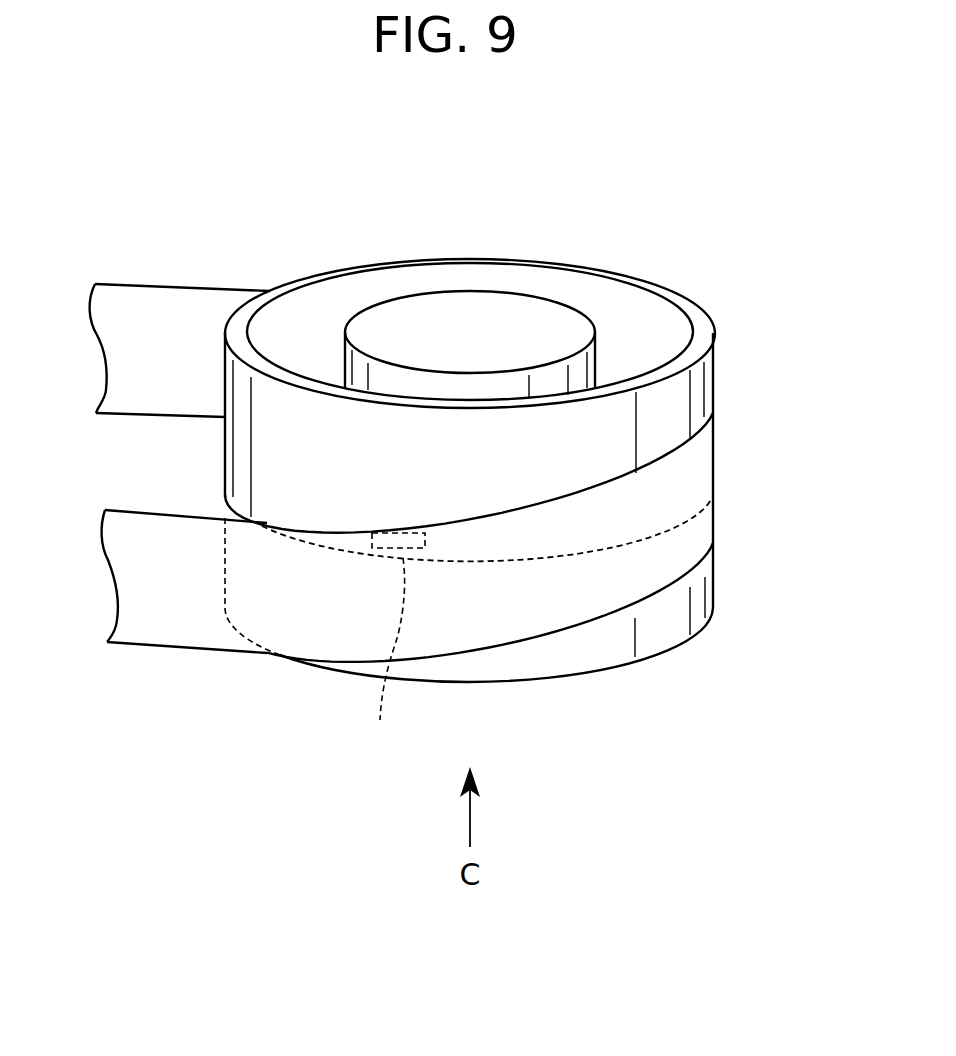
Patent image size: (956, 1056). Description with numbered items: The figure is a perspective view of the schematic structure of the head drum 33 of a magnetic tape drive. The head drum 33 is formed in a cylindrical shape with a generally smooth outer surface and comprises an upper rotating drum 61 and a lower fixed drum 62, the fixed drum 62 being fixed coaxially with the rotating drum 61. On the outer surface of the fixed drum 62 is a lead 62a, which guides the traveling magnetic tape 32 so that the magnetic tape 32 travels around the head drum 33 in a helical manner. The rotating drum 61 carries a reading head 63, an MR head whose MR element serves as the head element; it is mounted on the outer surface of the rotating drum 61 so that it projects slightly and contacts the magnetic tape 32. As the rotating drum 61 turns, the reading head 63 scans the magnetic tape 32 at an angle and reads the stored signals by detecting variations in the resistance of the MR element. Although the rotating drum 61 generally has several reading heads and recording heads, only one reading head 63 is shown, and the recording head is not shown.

The magnetic tape 32 is at (163, 613).
The head drum 33 is at (683, 238).
The rotating drum 61 is at (345, 270).
The fixed drum 62 is at (657, 635).
The lead 62a is at (713, 547).
The reading head 63 is at (398, 645).